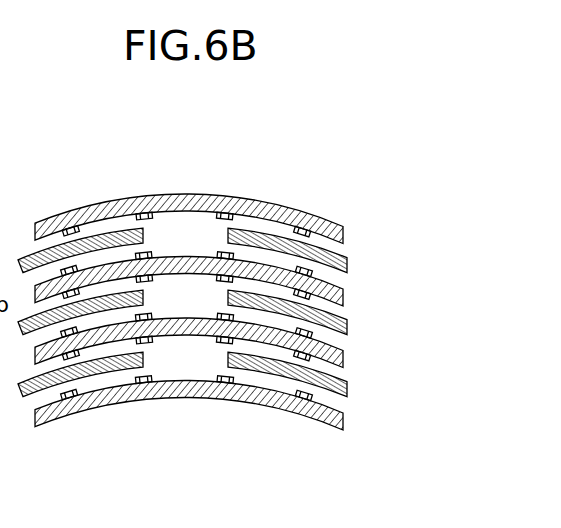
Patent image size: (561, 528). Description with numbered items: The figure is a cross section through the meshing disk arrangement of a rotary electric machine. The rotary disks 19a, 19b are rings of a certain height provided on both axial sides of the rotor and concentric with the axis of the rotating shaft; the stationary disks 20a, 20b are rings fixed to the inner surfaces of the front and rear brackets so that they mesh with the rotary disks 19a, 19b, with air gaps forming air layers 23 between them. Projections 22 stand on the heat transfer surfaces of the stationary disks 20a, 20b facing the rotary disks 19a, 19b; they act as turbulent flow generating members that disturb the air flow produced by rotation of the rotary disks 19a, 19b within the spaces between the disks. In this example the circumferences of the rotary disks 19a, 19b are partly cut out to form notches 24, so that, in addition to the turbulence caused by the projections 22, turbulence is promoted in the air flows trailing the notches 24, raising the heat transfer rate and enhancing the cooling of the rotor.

The rotary disk 19a is at (257, 277).
The rotary disk 19b is at (257, 277).
The stationary disk 20a is at (266, 322).
The stationary disk 20b is at (341, 224).
The projection 22 is at (148, 256).
The air layer 23 is at (258, 226).
The notch 24 is at (195, 235).